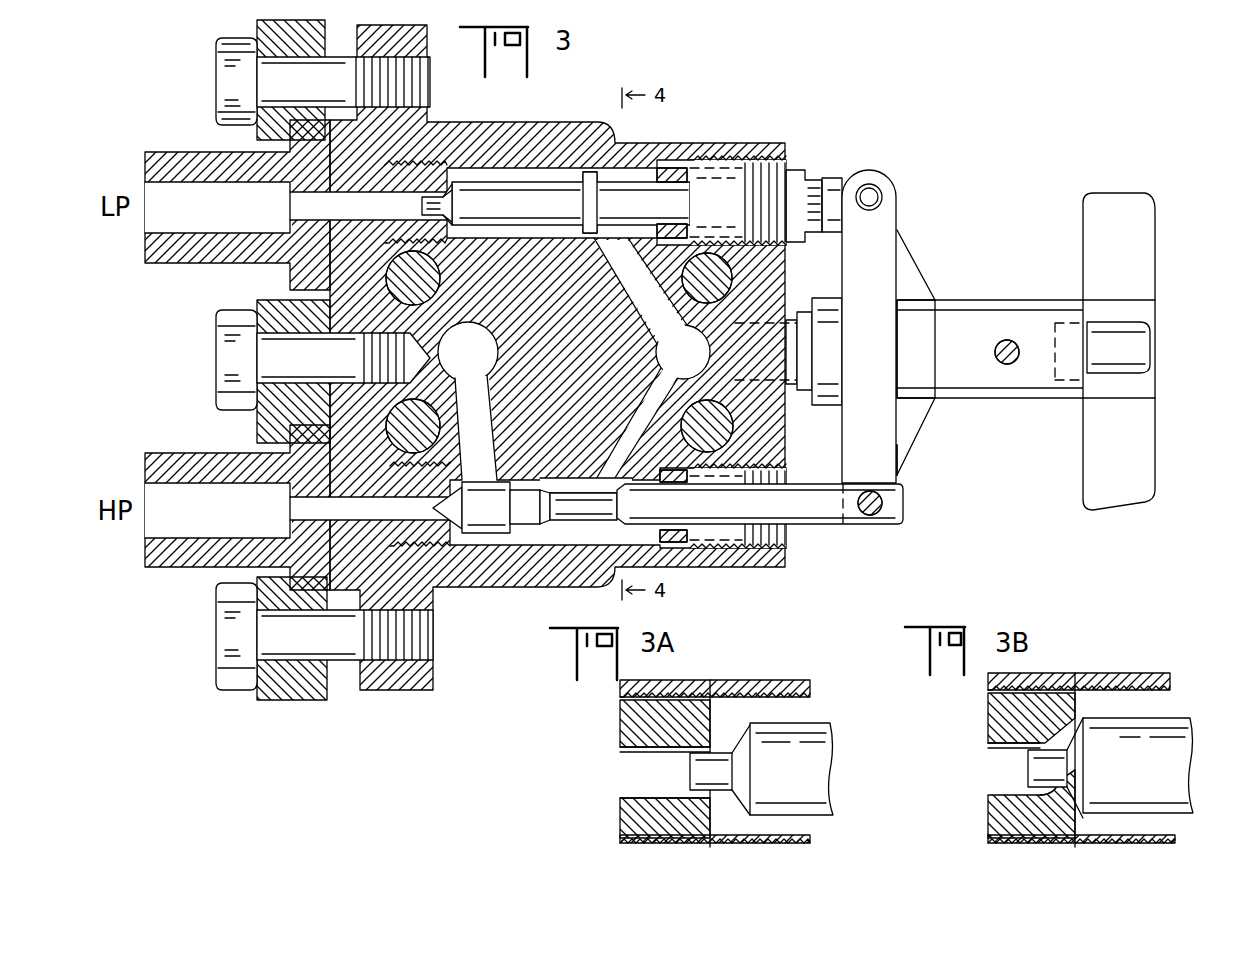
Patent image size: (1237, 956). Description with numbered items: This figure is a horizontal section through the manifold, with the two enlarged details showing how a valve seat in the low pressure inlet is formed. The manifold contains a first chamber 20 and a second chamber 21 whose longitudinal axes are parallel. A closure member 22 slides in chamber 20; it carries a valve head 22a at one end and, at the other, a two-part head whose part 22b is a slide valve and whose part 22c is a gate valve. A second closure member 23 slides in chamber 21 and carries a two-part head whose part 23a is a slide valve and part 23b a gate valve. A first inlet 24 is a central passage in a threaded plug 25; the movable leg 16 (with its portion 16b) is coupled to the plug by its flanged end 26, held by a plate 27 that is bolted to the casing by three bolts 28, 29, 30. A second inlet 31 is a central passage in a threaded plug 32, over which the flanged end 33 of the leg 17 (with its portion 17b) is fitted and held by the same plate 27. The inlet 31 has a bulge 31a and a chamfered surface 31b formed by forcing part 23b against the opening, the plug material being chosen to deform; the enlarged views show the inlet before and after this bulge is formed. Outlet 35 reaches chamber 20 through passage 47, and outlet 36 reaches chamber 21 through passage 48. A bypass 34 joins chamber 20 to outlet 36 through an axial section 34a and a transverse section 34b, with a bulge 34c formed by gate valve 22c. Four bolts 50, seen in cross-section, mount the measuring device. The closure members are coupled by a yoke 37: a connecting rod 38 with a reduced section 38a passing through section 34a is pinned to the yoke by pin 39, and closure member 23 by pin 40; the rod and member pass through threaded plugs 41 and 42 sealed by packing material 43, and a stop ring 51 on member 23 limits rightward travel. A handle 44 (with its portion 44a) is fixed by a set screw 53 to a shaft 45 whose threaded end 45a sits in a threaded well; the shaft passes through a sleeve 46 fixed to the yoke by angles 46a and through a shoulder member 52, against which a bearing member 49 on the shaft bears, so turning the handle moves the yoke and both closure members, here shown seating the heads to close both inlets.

In FIG. 3, the movable leg 16 is at (223, 508).
In FIG. 3, the high pressure pipe flange 16b is at (178, 456).
In FIG. 3, the movable leg 17 is at (223, 202).
In FIG. 3, the low pressure pipe bore 17b is at (178, 258).
In FIG. 3, the first chamber 20 is at (525, 548).
In FIG. 3, the second chamber 21 is at (508, 178).
In FIG. 3A, the second chamber 21 is at (790, 702).
In FIG. 3B, the second chamber 21 is at (1150, 697).
In FIG. 3, the closure member 22 is at (486, 515).
In FIG. 3, the valve head 22a is at (447, 522).
In FIG. 3, the slide valve 22b is at (537, 525).
In FIG. 3, the gate valve 22c is at (522, 523).
In FIG. 3, the second closure member 23 is at (635, 204).
In FIG. 3A, the second closure member 23 is at (772, 768).
In FIG. 3B, the second closure member 23 is at (1122, 767).
In FIG. 3, the slide valve 23a is at (440, 195).
In FIG. 3A, the slide valve 23a is at (720, 753).
In FIG. 3B, the slide valve 23a is at (1042, 760).
In FIG. 3, the gate valve 23b is at (452, 207).
In FIG. 3A, the gate valve 23b is at (745, 800).
In FIG. 3B, the gate valve 23b is at (1092, 795).
In FIG. 3, the first inlet 24 is at (357, 497).
In FIG. 3, the threaded plug 25 is at (387, 548).
In FIG. 3, the flanged end 26 is at (317, 420).
In FIG. 3, the plate 27 is at (265, 432).
In FIG. 3, the bolt 28 is at (216, 634).
In FIG. 3, the bolt 29 is at (215, 356).
In FIG. 3, the bolt 30 is at (214, 72).
In FIG. 3, the second inlet 31 is at (362, 214).
In FIG. 3A, the second inlet 31 is at (640, 752).
In FIG. 3B, the second inlet 31 is at (1005, 748).
In FIG. 3, the bulge 31a is at (448, 242).
In FIG. 3B, the bulge 31a is at (1050, 800).
In FIG. 3B, the chamfered surface 31b is at (1068, 805).
In FIG. 3, the threaded plug 32 is at (372, 155).
In FIG. 3A, the threaded plug 32 is at (640, 817).
In FIG. 3B, the threaded plug 32 is at (1000, 710).
In FIG. 3, the flanged end 33 is at (308, 285).
In FIG. 3, the bypass 34 is at (596, 478).
In FIG. 3, the bypass section 34a is at (580, 478).
In FIG. 3, the bypass section 34b is at (628, 410).
In FIG. 3, the bulge 34c is at (555, 478).
In FIG. 3, the outlet 35 is at (488, 352).
In FIG. 3, the outlet 36 is at (656, 352).
In FIG. 3, the yoke 37 is at (893, 312).
In FIG. 3, the connecting rod 38 is at (842, 526).
In FIG. 3, the reduced diameter section 38a is at (586, 522).
In FIG. 3, the pin 39 is at (873, 516).
In FIG. 3, the pin 40 is at (872, 188).
In FIG. 3, the threaded plug 41 is at (795, 548).
In FIG. 3, the threaded plug 42 is at (795, 166).
In FIG. 3, the packing material 43 is at (672, 166).
In FIG. 3, the handle 44 is at (1145, 232).
In FIG. 3, the knob bore 44a is at (940, 368).
In FIG. 3, the shaft 45 is at (1004, 352).
In FIG. 3, the threaded end 45a is at (786, 318).
In FIG. 3, the sleeve 46 is at (896, 356).
In FIG. 3, the angles 46a is at (915, 274).
In FIG. 3, the passage 47 is at (480, 410).
In FIG. 3, the passage 48 is at (625, 284).
In FIG. 3, the bearing member 49 is at (804, 392).
In FIG. 3, the bolts 50 is at (400, 290).
In FIG. 3, the stop member 51 is at (592, 172).
In FIG. 3, the shoulder member 52 is at (828, 298).
In FIG. 3, the set screw 53 is at (1010, 366).